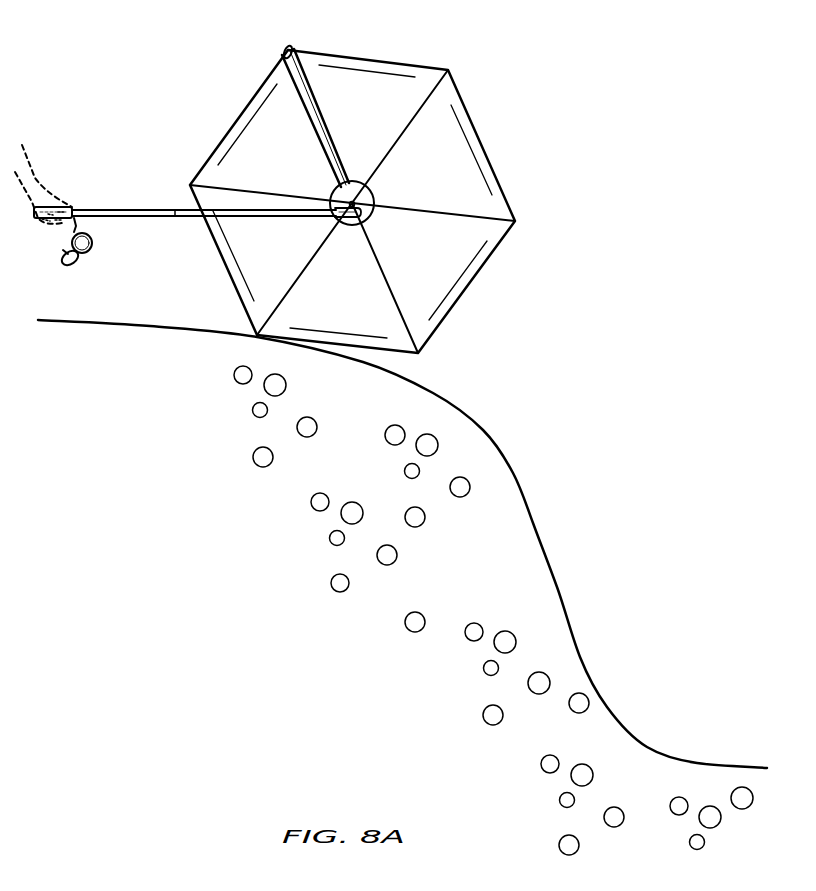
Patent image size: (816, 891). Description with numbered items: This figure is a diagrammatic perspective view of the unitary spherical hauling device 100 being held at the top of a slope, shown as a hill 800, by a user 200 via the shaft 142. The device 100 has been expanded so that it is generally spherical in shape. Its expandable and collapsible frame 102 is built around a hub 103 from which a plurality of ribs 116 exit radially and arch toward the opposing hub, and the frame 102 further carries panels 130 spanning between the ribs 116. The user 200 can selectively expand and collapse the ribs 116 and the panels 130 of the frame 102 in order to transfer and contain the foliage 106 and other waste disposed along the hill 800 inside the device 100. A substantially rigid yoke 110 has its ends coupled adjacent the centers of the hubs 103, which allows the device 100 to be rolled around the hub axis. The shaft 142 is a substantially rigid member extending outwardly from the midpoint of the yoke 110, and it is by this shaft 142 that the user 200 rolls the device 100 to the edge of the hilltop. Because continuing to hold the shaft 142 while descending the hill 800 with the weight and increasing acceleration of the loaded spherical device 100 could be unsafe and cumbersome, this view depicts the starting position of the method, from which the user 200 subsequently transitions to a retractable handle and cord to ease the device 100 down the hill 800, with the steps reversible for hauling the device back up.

The unitary spherical hauling device 100 is at (159, 70).
The frame 102 is at (252, 70).
The hub 103 is at (363, 200).
The foliage 106 is at (337, 577).
The yoke 110 is at (192, 219).
The ribs 116 is at (290, 49).
The panels 130 is at (373, 82).
The shaft 142 is at (98, 210).
The user 200 is at (33, 176).
The hill 800 is at (517, 475).